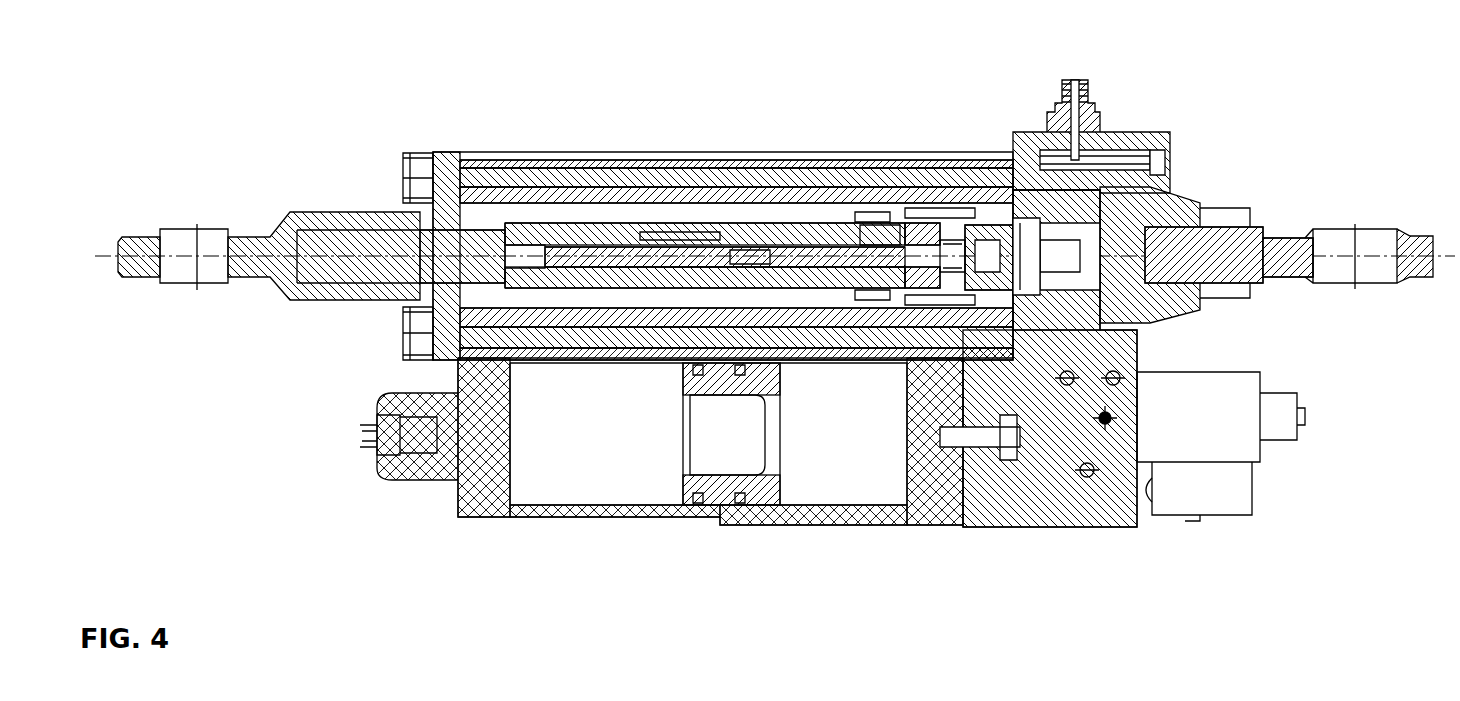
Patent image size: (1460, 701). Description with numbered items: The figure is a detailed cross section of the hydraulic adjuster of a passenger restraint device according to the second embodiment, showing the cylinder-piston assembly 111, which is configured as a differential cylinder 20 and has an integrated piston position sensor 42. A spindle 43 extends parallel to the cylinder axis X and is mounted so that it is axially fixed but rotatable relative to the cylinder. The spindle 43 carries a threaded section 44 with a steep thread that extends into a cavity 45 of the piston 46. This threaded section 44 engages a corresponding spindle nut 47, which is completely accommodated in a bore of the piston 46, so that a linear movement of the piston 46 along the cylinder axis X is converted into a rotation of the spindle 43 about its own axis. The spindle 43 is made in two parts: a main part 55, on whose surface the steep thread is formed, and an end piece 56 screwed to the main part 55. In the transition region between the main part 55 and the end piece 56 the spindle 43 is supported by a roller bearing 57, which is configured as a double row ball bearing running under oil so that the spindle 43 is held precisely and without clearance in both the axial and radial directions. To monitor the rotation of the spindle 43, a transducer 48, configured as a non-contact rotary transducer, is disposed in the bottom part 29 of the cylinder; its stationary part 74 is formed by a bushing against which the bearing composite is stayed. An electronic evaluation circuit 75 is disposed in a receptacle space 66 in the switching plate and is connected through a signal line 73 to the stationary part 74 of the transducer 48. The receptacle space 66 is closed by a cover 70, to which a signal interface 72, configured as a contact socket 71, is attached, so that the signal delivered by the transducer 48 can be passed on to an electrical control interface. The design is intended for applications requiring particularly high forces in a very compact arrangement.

The cylinder-piston assembly 111 is at (645, 274).
The differential cylinder 20 is at (334, 96).
The cavity 45 is at (522, 245).
The threaded section 44 is at (741, 240).
The main part 55 is at (683, 245).
The spindle 43 is at (749, 241).
The piston 46 is at (870, 232).
The spindle nut 47 is at (872, 236).
The piston position sensor 42 is at (899, 216).
The roller bearing 57 is at (934, 285).
The end piece 56 is at (945, 262).
The transducer 48 is at (996, 286).
The signal line 73 is at (1082, 250).
The stationary part 74 is at (1025, 272).
The bottom part 29 is at (1190, 212).
The cover 70 is at (1122, 143).
The receptacle space 66 is at (1147, 152).
The electronic evaluation circuit 75 is at (1168, 162).
The contact socket 71 is at (1085, 85).
The signal interface 72 is at (1066, 80).
The cylinder axis X is at (1368, 258).